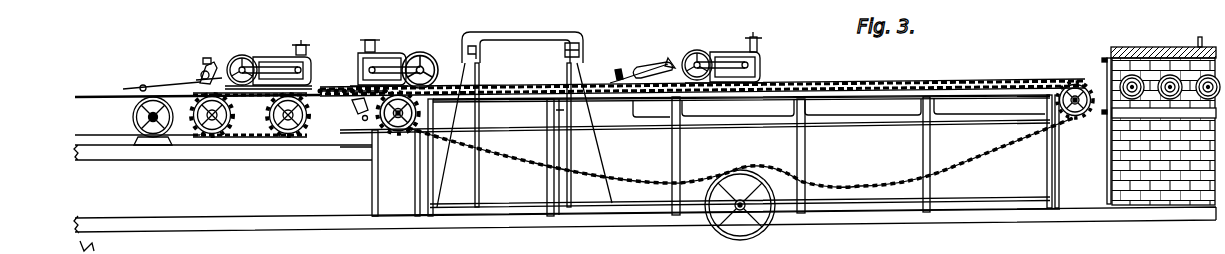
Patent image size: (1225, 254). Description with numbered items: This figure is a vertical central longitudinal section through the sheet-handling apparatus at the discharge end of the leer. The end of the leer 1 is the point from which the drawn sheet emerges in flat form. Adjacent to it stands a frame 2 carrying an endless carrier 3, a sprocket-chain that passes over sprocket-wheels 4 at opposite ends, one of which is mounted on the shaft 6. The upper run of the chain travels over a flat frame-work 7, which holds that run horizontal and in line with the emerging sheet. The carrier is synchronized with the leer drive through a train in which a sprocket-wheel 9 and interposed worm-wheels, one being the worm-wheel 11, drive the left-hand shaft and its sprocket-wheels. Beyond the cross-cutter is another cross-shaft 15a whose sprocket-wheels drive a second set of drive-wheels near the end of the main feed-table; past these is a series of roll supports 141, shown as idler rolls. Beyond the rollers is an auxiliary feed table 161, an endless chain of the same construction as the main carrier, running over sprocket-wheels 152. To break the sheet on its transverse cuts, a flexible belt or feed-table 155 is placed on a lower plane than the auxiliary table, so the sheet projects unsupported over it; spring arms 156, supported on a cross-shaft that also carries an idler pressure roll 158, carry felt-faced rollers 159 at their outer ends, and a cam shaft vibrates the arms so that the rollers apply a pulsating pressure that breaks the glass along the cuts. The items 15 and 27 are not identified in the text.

The end of the leer 1 is at (1150, 30).
The frame 2 is at (803, 158).
The endless carrier 3 is at (905, 82).
The sprocket-wheels 4 is at (390, 130).
The shaft 6 is at (1062, 101).
The flat frame-work 7 is at (601, 86).
The sprocket-wheel 9 is at (676, 96).
The worm-wheel 11 is at (337, 122).
The sprocket shaft 15 is at (420, 113).
The cross-shaft 15a is at (312, 88).
The conveyor chain run 27 is at (1012, 78).
The roll supports 141 is at (362, 97).
The sprocket-wheels 152 is at (205, 150).
The flexible belt or feed-table 155 is at (104, 95).
The spring arms 156 is at (167, 82).
The idler pressure roll 158 is at (223, 62).
The felt-faced rollers 159 is at (143, 85).
The auxiliary feed table 161 is at (257, 140).